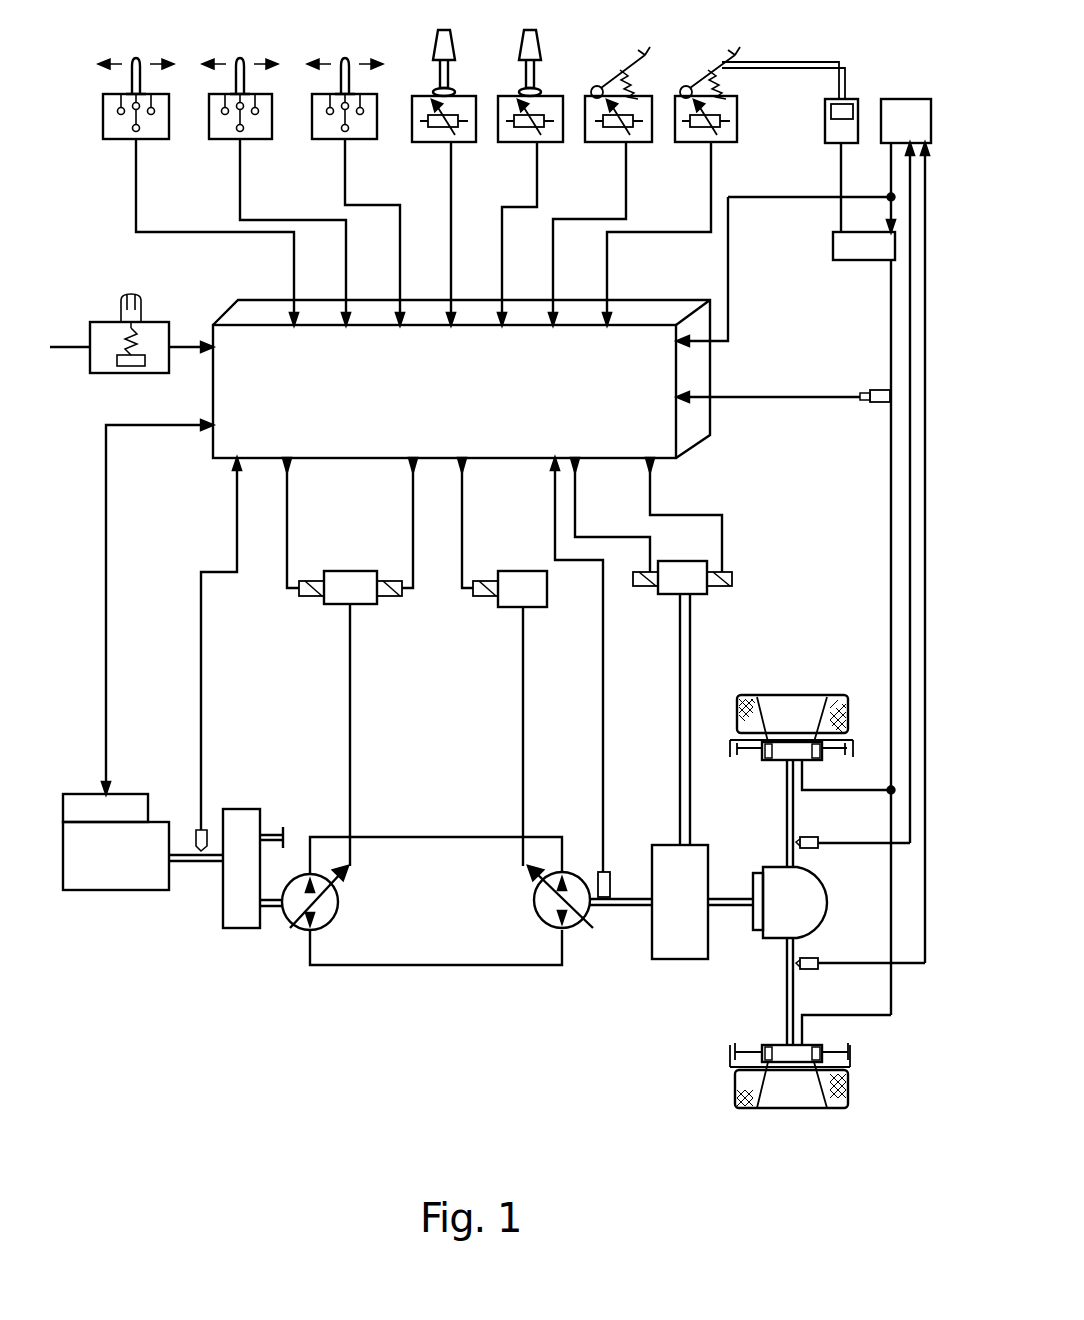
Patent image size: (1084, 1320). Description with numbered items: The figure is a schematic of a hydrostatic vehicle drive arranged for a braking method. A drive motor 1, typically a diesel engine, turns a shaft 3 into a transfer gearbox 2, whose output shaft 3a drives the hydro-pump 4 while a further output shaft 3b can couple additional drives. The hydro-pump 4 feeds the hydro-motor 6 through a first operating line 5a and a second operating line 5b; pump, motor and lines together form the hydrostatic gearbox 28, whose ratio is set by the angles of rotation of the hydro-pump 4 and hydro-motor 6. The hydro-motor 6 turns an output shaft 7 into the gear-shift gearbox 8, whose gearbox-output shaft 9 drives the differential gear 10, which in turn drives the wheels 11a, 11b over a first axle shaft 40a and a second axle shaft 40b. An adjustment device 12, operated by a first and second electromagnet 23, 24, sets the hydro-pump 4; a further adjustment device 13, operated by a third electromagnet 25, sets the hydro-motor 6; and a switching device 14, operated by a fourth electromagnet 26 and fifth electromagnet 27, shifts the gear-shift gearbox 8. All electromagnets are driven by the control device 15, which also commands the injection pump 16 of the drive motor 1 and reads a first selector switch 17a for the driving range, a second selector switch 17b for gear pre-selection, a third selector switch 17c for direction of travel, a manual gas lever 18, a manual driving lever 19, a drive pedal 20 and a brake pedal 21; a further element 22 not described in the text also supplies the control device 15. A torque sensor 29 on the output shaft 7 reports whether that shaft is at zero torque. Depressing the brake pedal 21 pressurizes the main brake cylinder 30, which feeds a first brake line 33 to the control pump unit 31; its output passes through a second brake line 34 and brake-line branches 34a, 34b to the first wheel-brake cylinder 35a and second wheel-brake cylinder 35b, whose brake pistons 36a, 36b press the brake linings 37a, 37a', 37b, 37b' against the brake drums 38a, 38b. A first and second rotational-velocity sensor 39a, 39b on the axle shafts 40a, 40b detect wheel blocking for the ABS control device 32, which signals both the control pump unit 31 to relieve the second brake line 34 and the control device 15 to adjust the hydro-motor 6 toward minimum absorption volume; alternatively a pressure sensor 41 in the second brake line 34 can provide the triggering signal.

The drive motor 1 is at (120, 874).
The transfer gearbox 2 is at (233, 907).
The shaft 3 is at (187, 852).
The output shaft 3a is at (275, 908).
The further output shaft 3b is at (272, 828).
The hydro-pump 4 is at (300, 920).
The first operating line 5a is at (470, 837).
The second operating line 5b is at (435, 965).
The hydro-motor 6 is at (570, 928).
The output shaft 7 is at (623, 906).
The gear-shift gearbox 8 is at (682, 960).
The gearbox-output shaft 9 is at (732, 907).
The differential gear 10 is at (815, 908).
The drive wheel 11a is at (787, 705).
The drive wheel 11b is at (787, 1100).
The adjustment device 12 is at (362, 597).
The further adjustment device 13 is at (510, 597).
The switching device 14 is at (673, 585).
The control device 15 is at (448, 401).
The injection pump 16 is at (82, 806).
The first selector switch 17a is at (116, 133).
The second selector switch 17b is at (221, 133).
The third selector switch 17c is at (325, 133).
The manual gas lever 18 is at (465, 103).
The manual driving lever 19 is at (531, 38).
The drive pedal 20 is at (597, 133).
The brake pedal 21 is at (687, 133).
The pressure sensor 22 is at (103, 330).
The first electromagnet 23 is at (320, 585).
The second electromagnet 24 is at (385, 583).
The third electromagnet 25 is at (488, 583).
The fourth electromagnet 26 is at (640, 580).
The fifth electromagnet 27 is at (716, 580).
The hydrostatic gearbox 28 is at (418, 911).
The torque sensor 29 is at (600, 872).
The main brake cylinder 30 is at (866, 76).
The control pump unit 31 is at (833, 246).
The ABS control device 32 is at (913, 108).
The first brake line 33 is at (838, 215).
The second brake line 34 is at (888, 315).
The brake-line branch 34a is at (890, 790).
The brake-line branch 34b is at (880, 1017).
The first wheel-brake cylinder 35a is at (780, 760).
The second wheel-brake cylinder 35b is at (775, 1047).
The brake piston 36a is at (767, 740).
The brake piston 36b is at (763, 1108).
The brake lining 37a is at (745, 780).
The brake lining 37a' is at (829, 785).
The brake lining 37b is at (727, 1059).
The brake lining 37b' is at (859, 1063).
The brake drum 38a is at (853, 740).
The brake drum 38b is at (735, 1068).
The first rotational-velocity sensor 39a is at (822, 847).
The second rotational-velocity sensor 39b is at (822, 967).
The first axle shaft 40a is at (786, 846).
The second axle shaft 40b is at (786, 964).
The pressure sensor 41 is at (875, 402).